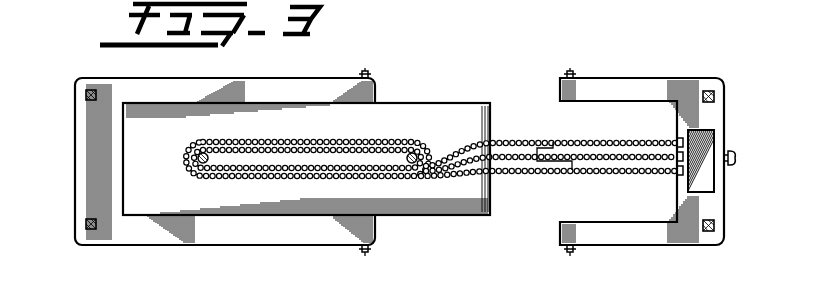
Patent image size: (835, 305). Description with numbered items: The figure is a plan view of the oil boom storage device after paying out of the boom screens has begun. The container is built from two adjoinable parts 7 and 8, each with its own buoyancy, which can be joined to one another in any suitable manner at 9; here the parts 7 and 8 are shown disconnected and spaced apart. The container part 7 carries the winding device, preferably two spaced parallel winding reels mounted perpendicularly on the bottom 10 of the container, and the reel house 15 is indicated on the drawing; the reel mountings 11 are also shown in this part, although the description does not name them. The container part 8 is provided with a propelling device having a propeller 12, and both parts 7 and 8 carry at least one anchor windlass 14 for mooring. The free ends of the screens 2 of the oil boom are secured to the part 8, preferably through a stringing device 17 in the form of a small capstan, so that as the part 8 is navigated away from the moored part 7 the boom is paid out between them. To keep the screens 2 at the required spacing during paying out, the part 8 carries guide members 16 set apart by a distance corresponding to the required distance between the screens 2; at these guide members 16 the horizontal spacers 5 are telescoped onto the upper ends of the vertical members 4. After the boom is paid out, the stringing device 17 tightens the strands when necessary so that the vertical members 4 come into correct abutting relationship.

The screen 2 is at (620, 168).
The vertical member 4 is at (282, 143).
The horizontal spacer 5 is at (543, 147).
The container part 7 is at (158, 88).
The container part 8 is at (630, 86).
The joining location 9 is at (362, 72).
The bottom of the container 10 is at (407, 101).
The pins 11 is at (207, 154).
The propeller 12 is at (735, 166).
The anchor windlass 14 is at (88, 247).
The reel house 15 is at (699, 194).
The guide member 16 is at (508, 140).
The stringing device 17 is at (679, 140).